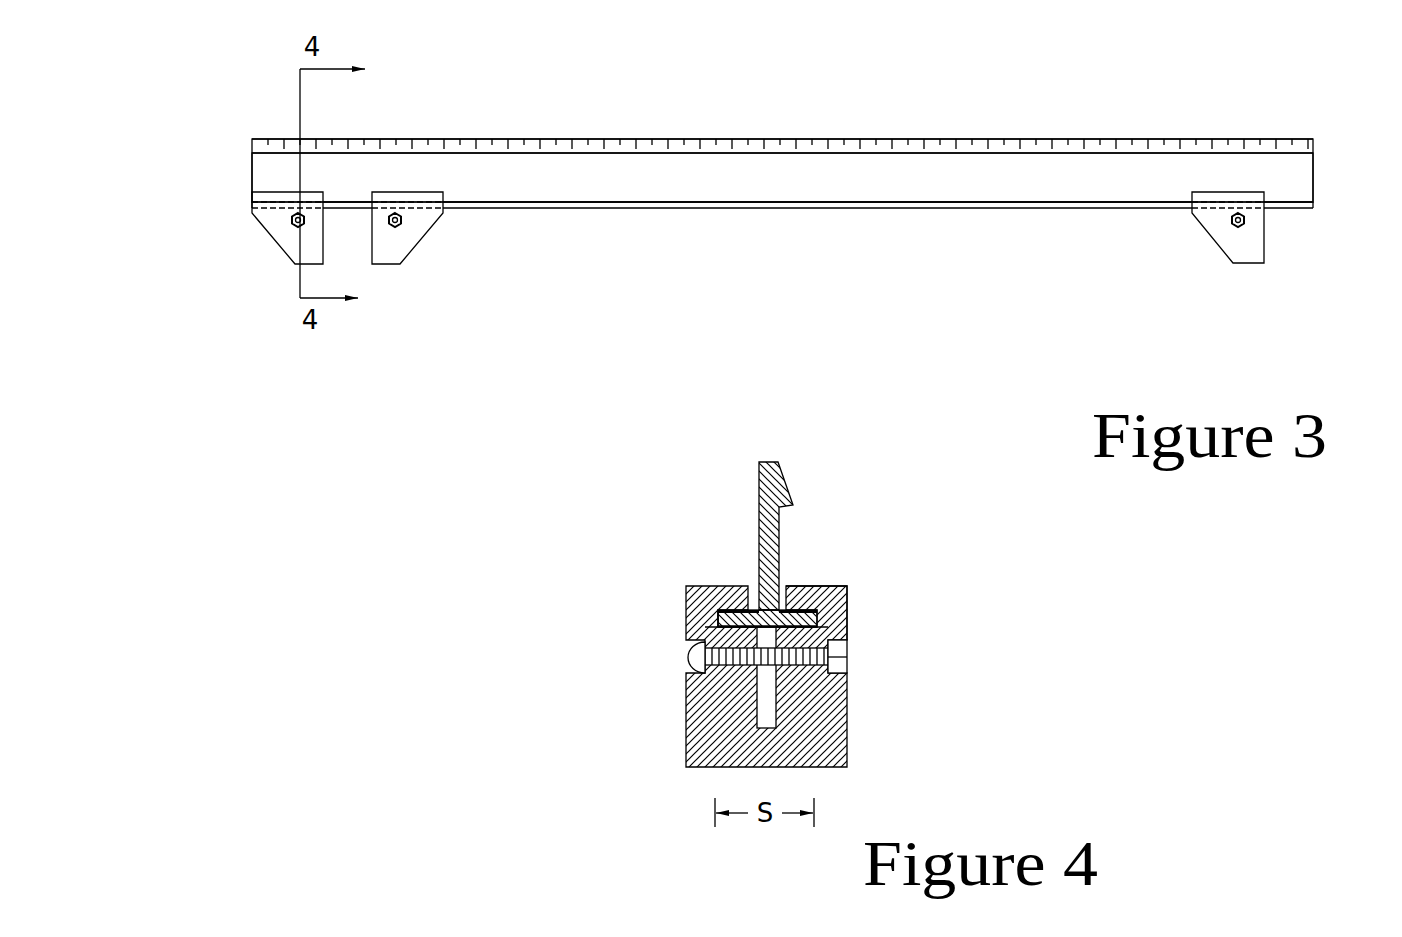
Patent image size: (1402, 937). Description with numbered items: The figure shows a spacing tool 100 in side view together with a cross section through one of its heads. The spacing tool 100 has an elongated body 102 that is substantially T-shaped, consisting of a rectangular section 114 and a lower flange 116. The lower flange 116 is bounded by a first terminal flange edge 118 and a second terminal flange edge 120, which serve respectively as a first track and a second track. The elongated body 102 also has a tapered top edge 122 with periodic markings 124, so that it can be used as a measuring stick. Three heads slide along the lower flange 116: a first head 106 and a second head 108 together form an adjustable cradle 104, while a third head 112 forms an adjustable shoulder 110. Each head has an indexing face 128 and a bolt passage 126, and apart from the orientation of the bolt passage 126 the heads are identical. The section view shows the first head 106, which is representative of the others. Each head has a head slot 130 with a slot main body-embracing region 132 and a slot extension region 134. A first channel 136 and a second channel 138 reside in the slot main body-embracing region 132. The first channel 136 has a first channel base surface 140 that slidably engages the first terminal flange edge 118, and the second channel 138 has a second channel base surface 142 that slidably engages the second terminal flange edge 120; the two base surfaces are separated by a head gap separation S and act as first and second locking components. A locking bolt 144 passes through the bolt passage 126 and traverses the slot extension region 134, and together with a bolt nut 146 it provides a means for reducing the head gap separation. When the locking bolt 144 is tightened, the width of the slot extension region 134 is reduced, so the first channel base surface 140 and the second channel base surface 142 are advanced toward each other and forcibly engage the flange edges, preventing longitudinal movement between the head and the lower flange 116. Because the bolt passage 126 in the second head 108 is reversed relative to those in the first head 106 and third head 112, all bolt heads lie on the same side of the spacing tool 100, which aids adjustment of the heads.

In FIG. 3, the spacing tool 100 is at (1035, 95).
In FIG. 4, the spacing tool 100 is at (614, 501).
In FIG. 3, the elongated body 102 is at (782, 125).
In FIG. 4, the elongated body 102 is at (877, 530).
In FIG. 3, the adjustable cradle 104 is at (346, 306).
In FIG. 3, the first head 106 is at (277, 237).
In FIG. 4, the first head 106 is at (812, 652).
In FIG. 3, the second head 108 is at (443, 232).
In FIG. 3, the adjustable shoulder 110 is at (1199, 288).
In FIG. 3, the third head 112 is at (1220, 237).
In FIG. 3, the rectangular section 114 is at (593, 170).
In FIG. 3, the lower flange 116 is at (837, 208).
In FIG. 4, the lower flange 116 is at (782, 650).
In FIG. 3, the first terminal flange edge 118 is at (702, 208).
In FIG. 4, the first terminal flange edge 118 is at (783, 586).
In FIG. 4, the second terminal flange edge 120 is at (732, 617).
In FIG. 3, the tapered top edge 122 is at (1167, 140).
In FIG. 4, the tapered top edge 122 is at (785, 485).
In FIG. 3, the periodic markings 124 is at (538, 139).
In FIG. 4, the bolt passage 126 is at (768, 641).
In FIG. 3, the indexing face 128 is at (372, 240).
In FIG. 4, the head slot 130 is at (786, 584).
In FIG. 4, the slot main body-embracing region 132 is at (568, 628).
In FIG. 4, the slot extension region 134 is at (568, 728).
In FIG. 4, the first channel 136 is at (813, 604).
In FIG. 4, the second channel 138 is at (735, 641).
In FIG. 4, the first channel base surface 140 is at (818, 627).
In FIG. 4, the second channel base surface 142 is at (718, 625).
In FIG. 4, the locking bolt 144 is at (688, 660).
In FIG. 4, the bolt nut 146 is at (840, 663).